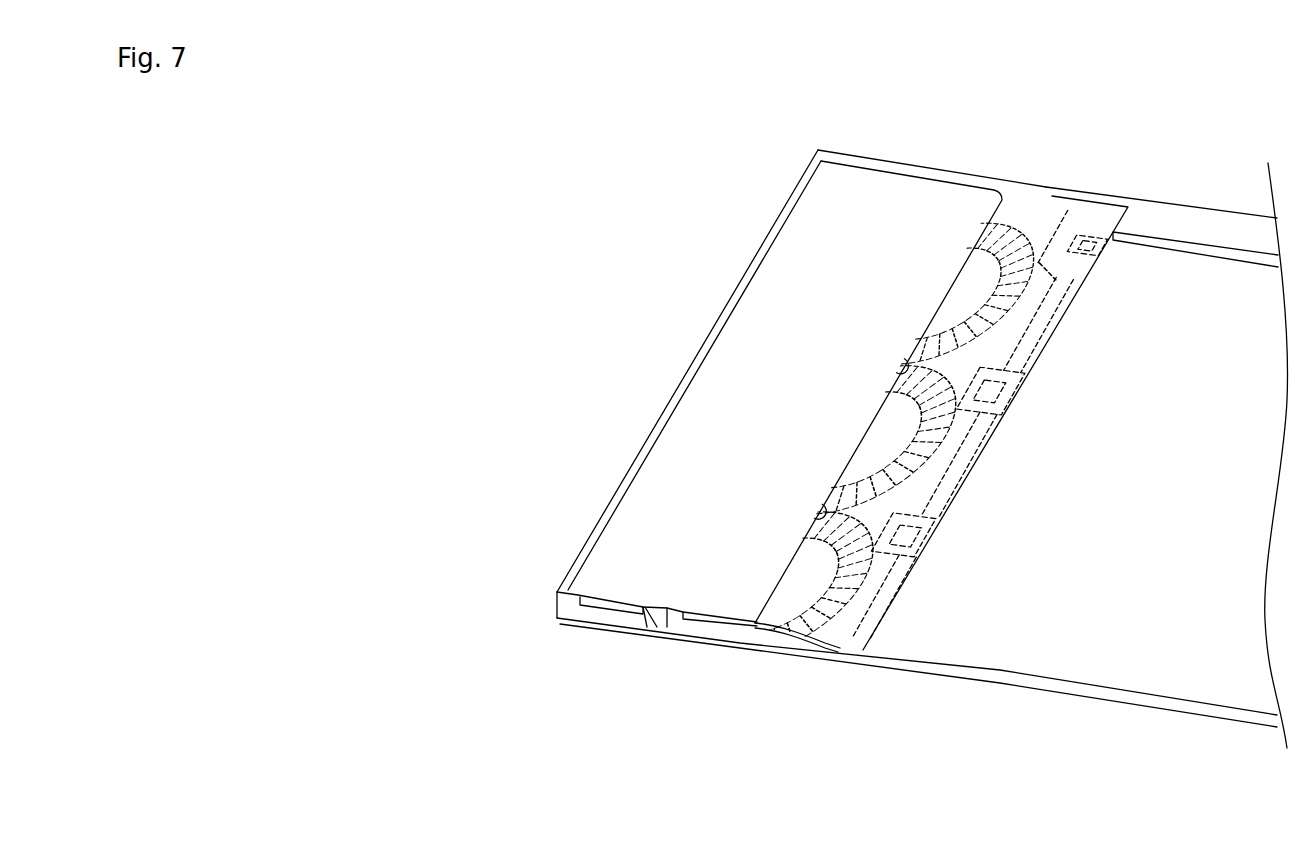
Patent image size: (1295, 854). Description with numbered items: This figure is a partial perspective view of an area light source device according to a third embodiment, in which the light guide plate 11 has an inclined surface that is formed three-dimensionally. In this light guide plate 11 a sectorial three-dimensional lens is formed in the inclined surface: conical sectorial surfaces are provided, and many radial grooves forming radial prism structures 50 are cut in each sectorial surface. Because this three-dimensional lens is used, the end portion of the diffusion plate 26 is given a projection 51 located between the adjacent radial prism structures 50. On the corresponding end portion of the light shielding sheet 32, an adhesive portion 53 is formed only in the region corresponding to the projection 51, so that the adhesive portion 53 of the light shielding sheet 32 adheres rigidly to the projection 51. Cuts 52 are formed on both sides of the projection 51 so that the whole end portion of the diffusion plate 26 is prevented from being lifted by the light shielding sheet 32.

The light guide plate 11 is at (713, 628).
The diffusion plate 26 is at (1062, 660).
The light shielding sheet 32 is at (1050, 216).
The radial prism structure 50 is at (800, 648).
The projection 51 is at (928, 527).
The cut 52 is at (937, 497).
The adhesive portion 53 is at (1010, 395).